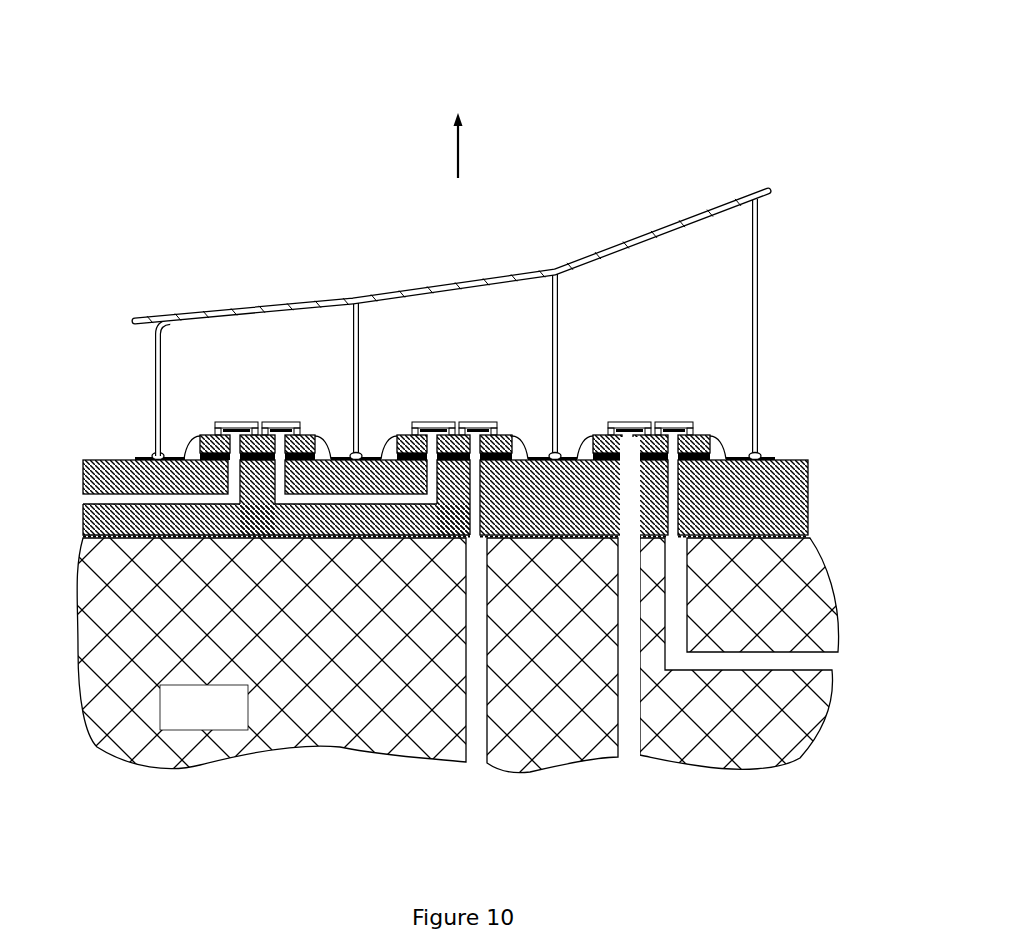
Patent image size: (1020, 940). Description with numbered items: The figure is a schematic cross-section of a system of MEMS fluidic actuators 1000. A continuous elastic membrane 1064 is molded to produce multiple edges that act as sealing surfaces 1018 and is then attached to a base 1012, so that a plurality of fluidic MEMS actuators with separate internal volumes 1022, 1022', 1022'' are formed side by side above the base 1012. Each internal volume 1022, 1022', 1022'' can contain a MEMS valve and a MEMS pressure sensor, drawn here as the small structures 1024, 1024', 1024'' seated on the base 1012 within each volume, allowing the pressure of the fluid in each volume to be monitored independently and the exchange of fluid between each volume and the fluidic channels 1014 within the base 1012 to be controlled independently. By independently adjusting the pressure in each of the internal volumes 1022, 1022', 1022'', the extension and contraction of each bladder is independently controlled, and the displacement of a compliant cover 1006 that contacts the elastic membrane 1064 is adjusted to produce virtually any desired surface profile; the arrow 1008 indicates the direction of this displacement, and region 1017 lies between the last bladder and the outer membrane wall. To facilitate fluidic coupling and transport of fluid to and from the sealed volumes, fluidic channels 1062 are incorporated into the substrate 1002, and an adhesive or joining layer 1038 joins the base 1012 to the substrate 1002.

The system of MEMS fluidic actuators 1000 is at (578, 135).
The substrate 1002 is at (235, 722).
The compliant cover 1006 is at (757, 190).
The rotation axis 1008 is at (457, 155).
The base 1012 is at (103, 470).
The fluidic channels 1014 is at (100, 500).
The gap region 1017 is at (780, 432).
The sealing surfaces 1018 is at (157, 453).
The internal volume 1022 is at (190, 389).
The internal volume 1022' is at (400, 379).
The internal volume 1022'' is at (600, 365).
The electrode structure 1024 is at (266, 399).
The second electrode structure 1024' is at (464, 388).
The third electrode structure 1024'' is at (662, 393).
The layer 1038 is at (800, 535).
The fluidic channels 1062 is at (630, 752).
The elastic membrane 1064 is at (757, 252).